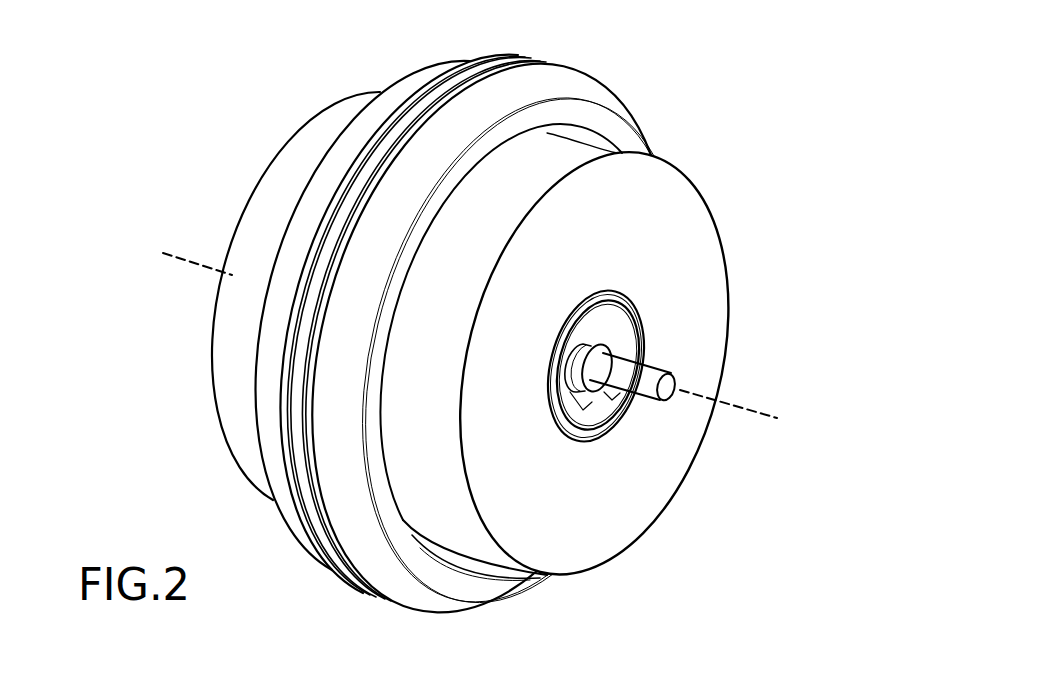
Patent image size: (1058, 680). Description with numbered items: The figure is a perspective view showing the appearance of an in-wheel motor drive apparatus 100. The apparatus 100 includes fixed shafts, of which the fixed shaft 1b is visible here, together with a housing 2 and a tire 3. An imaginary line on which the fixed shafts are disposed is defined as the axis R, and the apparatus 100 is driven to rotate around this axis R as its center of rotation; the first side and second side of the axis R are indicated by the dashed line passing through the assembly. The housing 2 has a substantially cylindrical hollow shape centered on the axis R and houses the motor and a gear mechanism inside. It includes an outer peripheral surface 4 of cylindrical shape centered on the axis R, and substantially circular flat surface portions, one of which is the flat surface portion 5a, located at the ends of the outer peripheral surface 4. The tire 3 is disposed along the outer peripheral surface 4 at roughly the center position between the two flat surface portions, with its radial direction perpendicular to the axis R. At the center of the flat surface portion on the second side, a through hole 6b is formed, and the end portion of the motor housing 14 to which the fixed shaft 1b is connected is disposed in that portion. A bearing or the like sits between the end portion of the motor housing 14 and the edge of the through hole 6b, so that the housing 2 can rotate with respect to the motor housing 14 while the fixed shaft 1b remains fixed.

The in-wheel motor drive apparatus 100 is at (195, 88).
The housing 2 is at (711, 207).
The tire 3 is at (548, 82).
The outer peripheral surface 4 is at (305, 148).
The flat surface portion 5a is at (264, 174).
The fixed shaft 1b is at (630, 378).
The through hole 6b is at (572, 426).
The motor housing 14 is at (618, 418).
The axis R is at (174, 252).